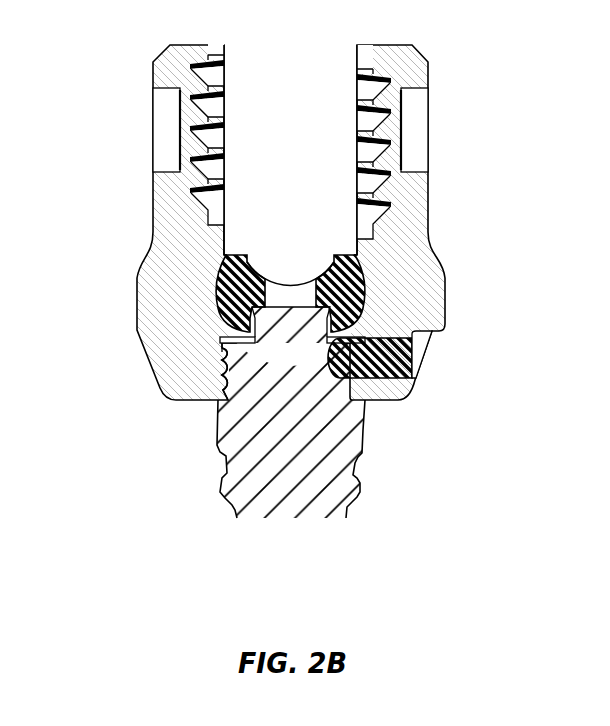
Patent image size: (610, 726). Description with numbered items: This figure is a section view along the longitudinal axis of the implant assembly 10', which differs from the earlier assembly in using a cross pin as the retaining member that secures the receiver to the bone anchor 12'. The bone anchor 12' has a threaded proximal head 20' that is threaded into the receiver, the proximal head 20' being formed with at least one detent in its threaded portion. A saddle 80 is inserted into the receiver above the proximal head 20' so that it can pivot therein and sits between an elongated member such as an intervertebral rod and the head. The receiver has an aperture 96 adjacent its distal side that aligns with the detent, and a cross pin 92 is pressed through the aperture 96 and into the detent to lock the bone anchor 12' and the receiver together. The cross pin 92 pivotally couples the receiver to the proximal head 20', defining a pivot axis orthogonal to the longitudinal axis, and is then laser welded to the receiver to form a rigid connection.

The implant assembly 10' is at (361, 215).
The saddle 80 is at (335, 286).
The aperture 96 is at (412, 358).
The cross pin 92 is at (333, 380).
The proximal head 20' is at (138, 393).
The bone anchor 12' is at (343, 434).